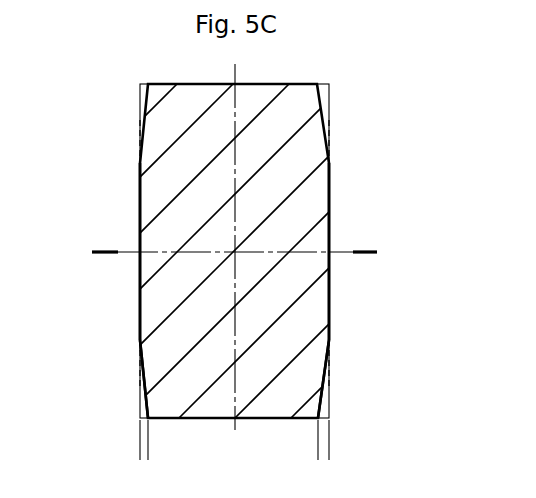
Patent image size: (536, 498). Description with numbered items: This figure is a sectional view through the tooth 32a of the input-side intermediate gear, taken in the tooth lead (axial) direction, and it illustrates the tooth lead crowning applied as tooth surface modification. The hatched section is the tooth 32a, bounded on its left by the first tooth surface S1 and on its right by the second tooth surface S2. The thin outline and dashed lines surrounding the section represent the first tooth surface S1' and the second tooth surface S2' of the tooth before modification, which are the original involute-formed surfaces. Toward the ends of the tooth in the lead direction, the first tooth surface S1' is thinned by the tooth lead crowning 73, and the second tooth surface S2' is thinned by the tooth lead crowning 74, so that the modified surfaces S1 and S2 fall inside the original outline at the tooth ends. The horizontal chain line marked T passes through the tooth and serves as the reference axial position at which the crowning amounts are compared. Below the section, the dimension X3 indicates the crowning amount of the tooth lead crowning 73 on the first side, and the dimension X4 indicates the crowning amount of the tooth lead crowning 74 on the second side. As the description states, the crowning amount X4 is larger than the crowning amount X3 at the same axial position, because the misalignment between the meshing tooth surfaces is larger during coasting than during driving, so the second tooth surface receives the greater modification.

The tooth 32a is at (295, 205).
The first tooth surface S1 is at (102, 251).
The second tooth surface S2 is at (371, 251).
The first tooth surface before tooth surface modification S1' is at (106, 242).
The second tooth surface before tooth surface modification S2' is at (366, 244).
The tooth lead crowning 73 is at (143, 388).
The tooth lead crowning 74 is at (328, 377).
The thickness-center line T is at (105, 256).
The crowning amount X3 is at (176, 450).
The crowning amount X4 is at (292, 450).